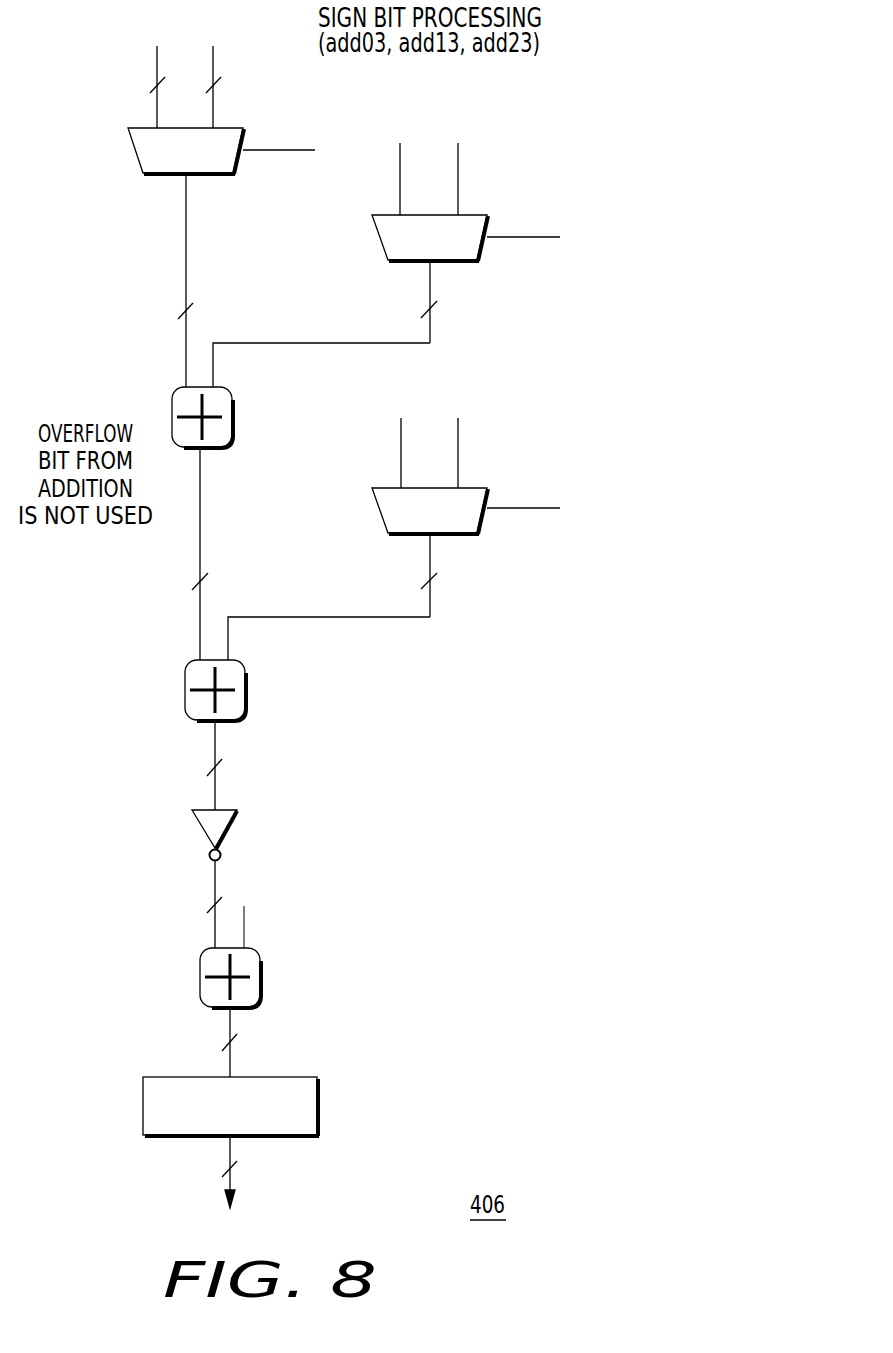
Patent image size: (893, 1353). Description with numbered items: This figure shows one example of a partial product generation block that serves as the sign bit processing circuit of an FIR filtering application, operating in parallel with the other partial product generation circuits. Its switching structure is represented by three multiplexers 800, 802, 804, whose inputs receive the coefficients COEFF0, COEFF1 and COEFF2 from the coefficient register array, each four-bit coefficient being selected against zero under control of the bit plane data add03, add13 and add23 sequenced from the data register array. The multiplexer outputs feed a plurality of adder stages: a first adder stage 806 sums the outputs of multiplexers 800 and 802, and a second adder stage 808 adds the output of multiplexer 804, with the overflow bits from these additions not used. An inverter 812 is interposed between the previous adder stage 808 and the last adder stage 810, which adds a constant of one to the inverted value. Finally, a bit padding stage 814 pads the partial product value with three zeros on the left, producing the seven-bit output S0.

The multiplexer 800 is at (209, 176).
The multiplexer 802 is at (462, 263).
The multiplexer 804 is at (457, 536).
The adder stage 806 is at (233, 416).
The adder stage 808 is at (246, 686).
The adder stage 810 is at (261, 972).
The inverter 812 is at (196, 826).
The bit padding stage 814 is at (162, 1077).